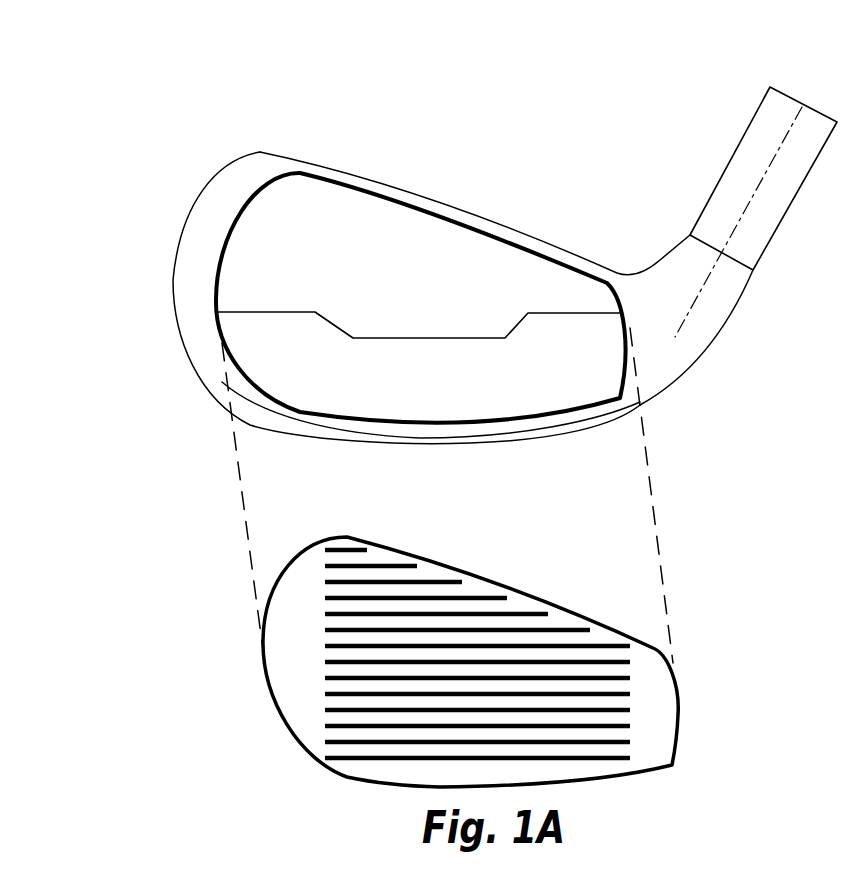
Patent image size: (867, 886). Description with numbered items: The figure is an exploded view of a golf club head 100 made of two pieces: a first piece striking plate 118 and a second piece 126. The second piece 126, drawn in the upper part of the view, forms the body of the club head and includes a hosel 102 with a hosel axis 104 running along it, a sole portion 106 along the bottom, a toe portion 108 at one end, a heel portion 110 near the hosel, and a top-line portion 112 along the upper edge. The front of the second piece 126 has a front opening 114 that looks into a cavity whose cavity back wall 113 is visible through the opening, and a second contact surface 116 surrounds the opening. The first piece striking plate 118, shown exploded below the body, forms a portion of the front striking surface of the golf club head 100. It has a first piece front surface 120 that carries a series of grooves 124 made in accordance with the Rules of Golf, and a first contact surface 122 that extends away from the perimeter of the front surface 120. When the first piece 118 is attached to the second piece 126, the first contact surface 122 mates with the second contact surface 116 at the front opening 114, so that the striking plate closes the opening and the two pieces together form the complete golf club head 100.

The golf club head 100 is at (122, 80).
The hosel 102 is at (757, 132).
The hosel axis 104 is at (808, 95).
The sole portion 106 is at (455, 448).
The toe portion 108 is at (137, 315).
The heel portion 110 is at (745, 358).
The top-line portion 112 is at (480, 152).
The cavity back wall 113 is at (442, 360).
The front opening 114 is at (273, 245).
The second contact surface 116 is at (605, 285).
The first piece striking plate 118 is at (675, 733).
The first piece front surface 120 is at (293, 698).
The first contact surface 122 is at (290, 740).
The grooves 124 is at (432, 575).
The second piece 126 is at (257, 148).